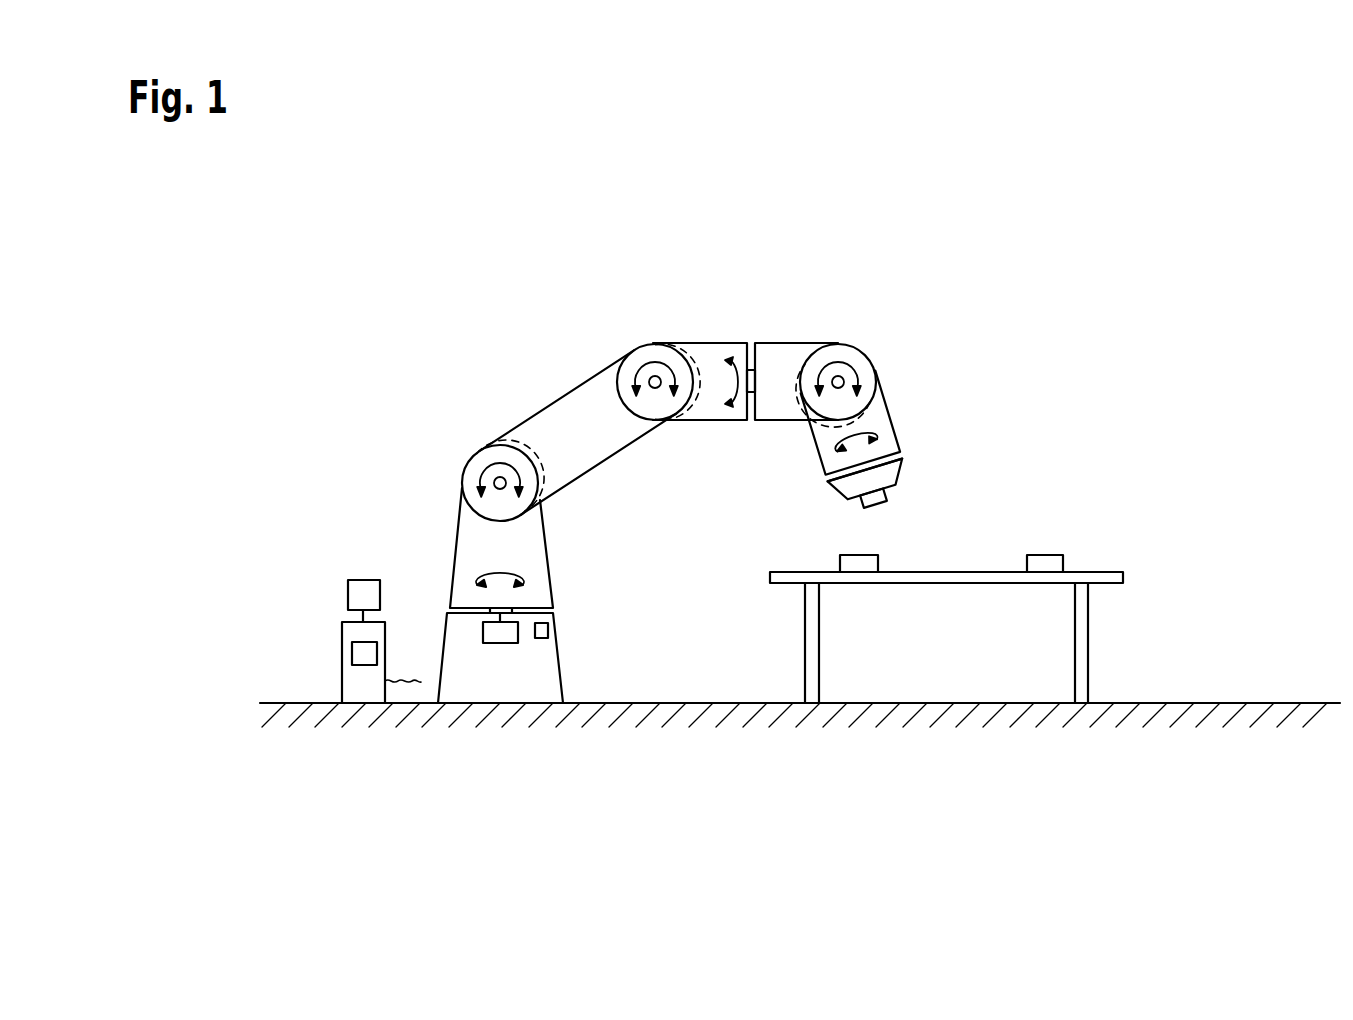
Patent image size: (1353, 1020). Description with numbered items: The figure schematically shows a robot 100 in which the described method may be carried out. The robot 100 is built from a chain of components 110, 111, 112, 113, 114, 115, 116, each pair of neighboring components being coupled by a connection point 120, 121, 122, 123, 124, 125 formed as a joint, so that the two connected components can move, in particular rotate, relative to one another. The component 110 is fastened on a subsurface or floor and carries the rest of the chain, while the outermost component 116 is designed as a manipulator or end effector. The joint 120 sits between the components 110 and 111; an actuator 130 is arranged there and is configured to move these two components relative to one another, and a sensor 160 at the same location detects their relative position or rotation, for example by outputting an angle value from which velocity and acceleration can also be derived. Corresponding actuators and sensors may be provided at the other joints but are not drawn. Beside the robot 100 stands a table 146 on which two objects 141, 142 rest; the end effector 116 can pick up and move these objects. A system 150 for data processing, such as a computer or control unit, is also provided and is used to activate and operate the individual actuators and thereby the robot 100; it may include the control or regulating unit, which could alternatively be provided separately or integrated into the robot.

The robot 100 is at (483, 297).
The component 110 is at (562, 680).
The component 111 is at (547, 540).
The component 112 is at (612, 460).
The component 113 is at (698, 343).
The component 114 is at (788, 343).
The component 115 is at (893, 418).
The component 116 is at (900, 476).
The connection point 120 is at (582, 599).
The connection point 121 is at (448, 424).
The connection point 122 is at (628, 322).
The connection point 123 is at (751, 309).
The connection point 124 is at (882, 337).
The connection point 125 is at (933, 450).
The actuator 130 is at (500, 643).
The object 141 is at (840, 562).
The object 142 is at (1063, 562).
The table 146 is at (1125, 575).
The system for data processing 150 is at (324, 643).
The sensor 160 is at (548, 628).